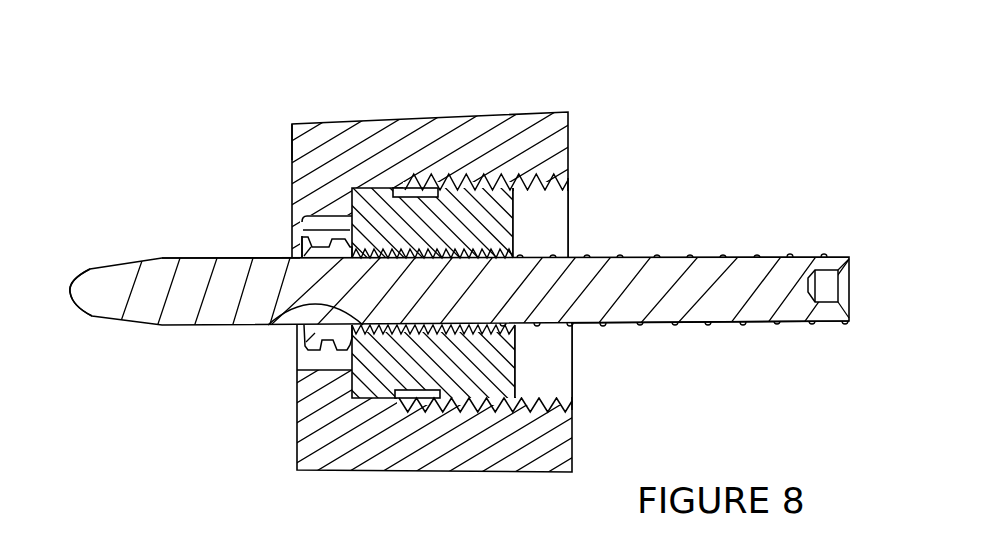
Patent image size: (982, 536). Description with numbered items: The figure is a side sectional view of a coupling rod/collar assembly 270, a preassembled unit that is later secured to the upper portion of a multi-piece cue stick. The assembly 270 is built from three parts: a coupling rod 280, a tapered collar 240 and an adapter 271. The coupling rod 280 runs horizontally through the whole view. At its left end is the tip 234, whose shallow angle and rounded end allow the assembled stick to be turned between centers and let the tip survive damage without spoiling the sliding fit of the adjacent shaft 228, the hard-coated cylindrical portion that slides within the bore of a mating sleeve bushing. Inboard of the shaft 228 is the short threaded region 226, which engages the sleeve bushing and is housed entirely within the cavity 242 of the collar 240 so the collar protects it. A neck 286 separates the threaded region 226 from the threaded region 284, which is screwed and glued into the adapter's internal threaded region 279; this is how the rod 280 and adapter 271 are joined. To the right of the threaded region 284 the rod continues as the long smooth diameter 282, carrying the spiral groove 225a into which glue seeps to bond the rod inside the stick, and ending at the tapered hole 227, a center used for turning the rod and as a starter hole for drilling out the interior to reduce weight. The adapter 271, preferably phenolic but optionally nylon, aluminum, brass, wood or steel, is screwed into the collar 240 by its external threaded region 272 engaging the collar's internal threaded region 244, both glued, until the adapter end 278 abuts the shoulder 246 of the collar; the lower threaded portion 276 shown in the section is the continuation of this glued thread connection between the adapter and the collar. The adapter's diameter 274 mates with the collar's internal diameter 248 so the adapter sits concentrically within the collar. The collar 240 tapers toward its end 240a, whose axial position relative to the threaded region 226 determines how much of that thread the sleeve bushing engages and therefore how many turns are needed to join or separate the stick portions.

The coupling rod/collar assembly 270 is at (745, 98).
The threaded region 284 is at (405, 256).
The tapered collar 240 is at (433, 117).
The end 240a is at (290, 140).
The threaded region 272 is at (507, 183).
The threaded region 244 is at (556, 192).
The adapter 271 is at (513, 220).
The coupling rod 280 is at (768, 257).
The end 278 is at (303, 230).
The threaded region 226 is at (300, 238).
The shaft 228 is at (142, 258).
The tip 234 is at (68, 292).
The neck 286 is at (270, 330).
The cavity 242 is at (297, 360).
The shoulder 246 is at (352, 372).
The internal diameter 248 is at (360, 393).
The diameter 274 is at (388, 400).
The lower housing threads 276 is at (425, 405).
The threaded region 279 is at (500, 335).
The spiral groove 225a is at (707, 325).
The smooth diameter 282 is at (766, 326).
The tapered hole 227 is at (853, 288).